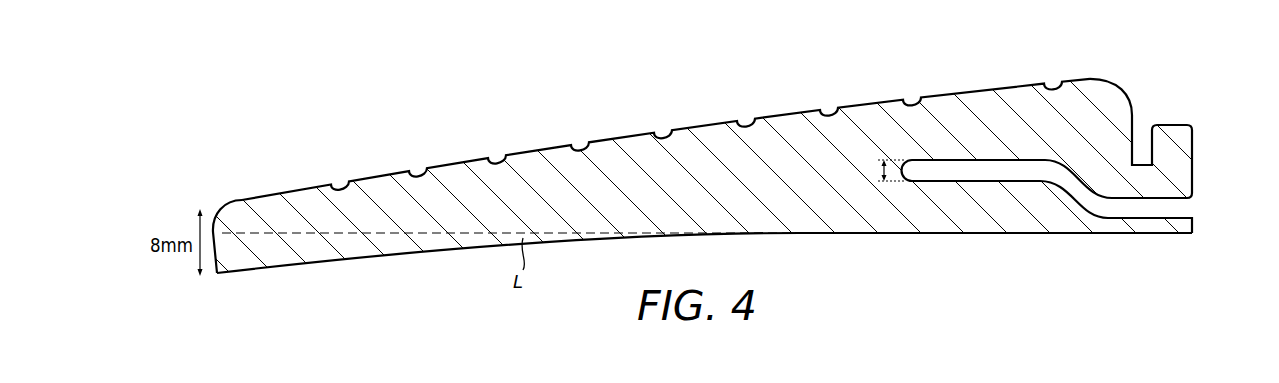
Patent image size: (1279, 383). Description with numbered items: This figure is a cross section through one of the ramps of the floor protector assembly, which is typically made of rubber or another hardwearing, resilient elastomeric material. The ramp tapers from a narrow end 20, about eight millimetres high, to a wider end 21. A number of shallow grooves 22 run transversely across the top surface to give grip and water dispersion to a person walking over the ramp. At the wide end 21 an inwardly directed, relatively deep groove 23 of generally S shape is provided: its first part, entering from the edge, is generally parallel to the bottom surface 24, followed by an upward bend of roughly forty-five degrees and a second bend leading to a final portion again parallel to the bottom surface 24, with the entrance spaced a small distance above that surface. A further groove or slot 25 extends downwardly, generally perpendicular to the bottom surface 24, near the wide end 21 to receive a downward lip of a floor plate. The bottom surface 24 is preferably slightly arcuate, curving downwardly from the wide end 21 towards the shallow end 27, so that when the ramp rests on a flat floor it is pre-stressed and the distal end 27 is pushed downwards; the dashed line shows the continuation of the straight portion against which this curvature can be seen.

The narrow end 20 is at (216, 257).
The wider end 21 is at (1150, 80).
The shallow grooves 22 is at (832, 110).
The deep groove 23 is at (1188, 209).
The bottom surface 24 is at (1031, 236).
The slot 25 is at (1143, 143).
The shallow end 27 is at (224, 212).